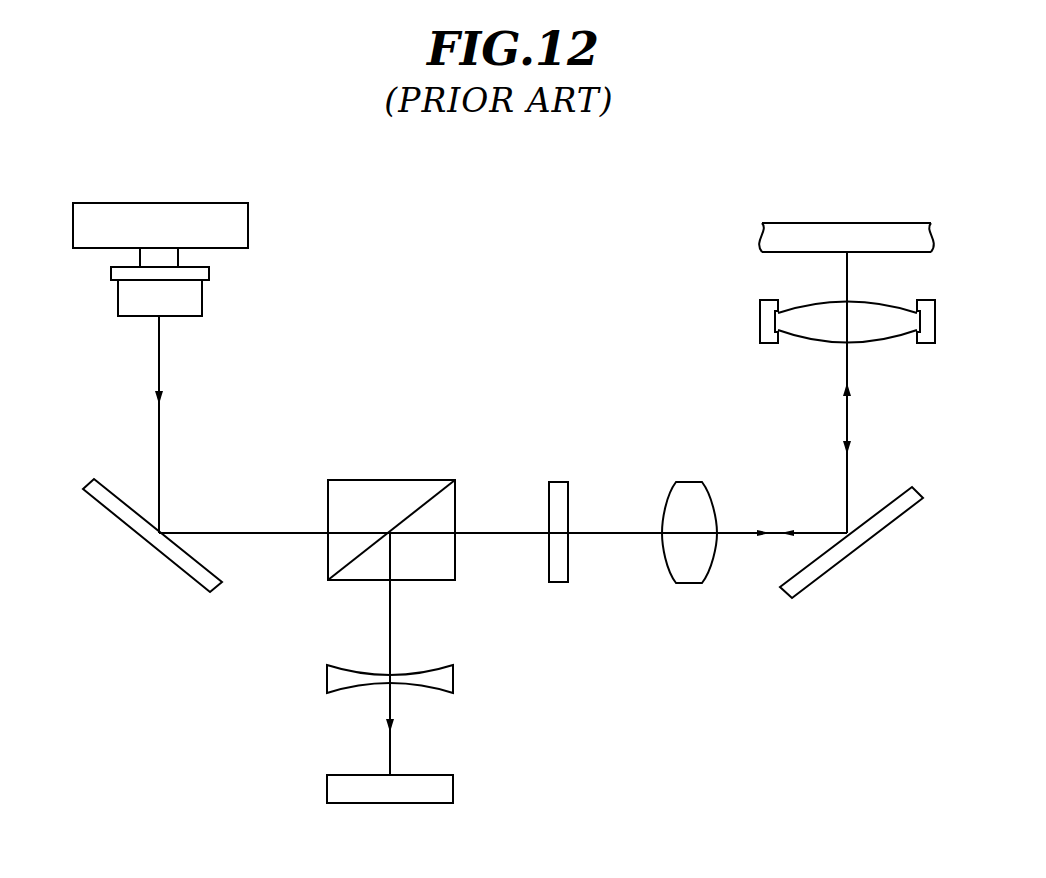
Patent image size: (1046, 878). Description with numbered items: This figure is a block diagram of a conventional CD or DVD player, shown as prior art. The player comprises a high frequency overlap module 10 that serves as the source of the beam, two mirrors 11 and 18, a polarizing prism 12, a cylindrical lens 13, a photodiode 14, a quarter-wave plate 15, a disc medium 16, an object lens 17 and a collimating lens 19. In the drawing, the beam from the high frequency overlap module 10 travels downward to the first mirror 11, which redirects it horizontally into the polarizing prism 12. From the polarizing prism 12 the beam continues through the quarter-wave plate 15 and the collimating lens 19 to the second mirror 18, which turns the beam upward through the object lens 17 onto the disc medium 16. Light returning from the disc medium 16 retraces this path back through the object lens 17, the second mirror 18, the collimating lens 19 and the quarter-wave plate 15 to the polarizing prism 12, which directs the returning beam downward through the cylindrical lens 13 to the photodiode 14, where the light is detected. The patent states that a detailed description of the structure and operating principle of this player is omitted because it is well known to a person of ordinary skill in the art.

The high frequency overlap module 10 is at (203, 203).
The mirror 11 is at (148, 544).
The polarizing prism 12 is at (432, 480).
The cylindrical lens 13 is at (455, 679).
The photodiode 14 is at (455, 789).
The λ/4 plate 15 is at (556, 482).
The disc medium 16 is at (890, 223).
The object lens 17 is at (760, 320).
The mirror 18 is at (863, 543).
The collimating lens 19 is at (690, 482).